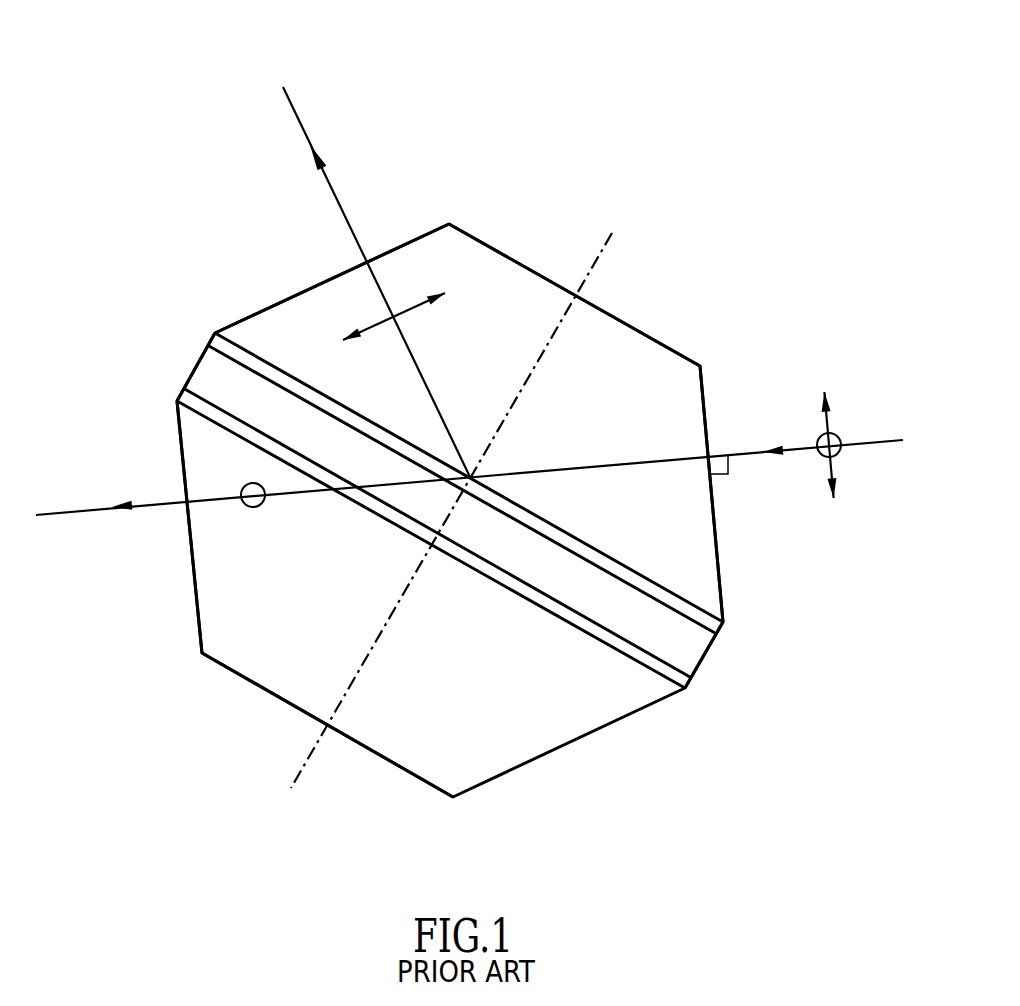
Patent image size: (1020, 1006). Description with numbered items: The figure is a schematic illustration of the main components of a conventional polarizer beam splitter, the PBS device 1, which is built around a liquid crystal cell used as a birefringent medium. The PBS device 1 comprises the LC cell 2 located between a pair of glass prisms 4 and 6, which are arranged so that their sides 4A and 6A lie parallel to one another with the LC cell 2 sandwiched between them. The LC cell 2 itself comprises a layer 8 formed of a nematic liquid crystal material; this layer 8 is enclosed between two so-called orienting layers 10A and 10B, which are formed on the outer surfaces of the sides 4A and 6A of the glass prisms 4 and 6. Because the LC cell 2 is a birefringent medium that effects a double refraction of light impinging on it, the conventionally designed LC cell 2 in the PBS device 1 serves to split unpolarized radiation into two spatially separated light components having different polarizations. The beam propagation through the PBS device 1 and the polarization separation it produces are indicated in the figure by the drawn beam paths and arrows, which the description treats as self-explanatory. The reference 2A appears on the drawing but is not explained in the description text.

The polarizer beam splitter device 1 is at (147, 70).
The LC cell 2 is at (392, 405).
The first surface edge 2A is at (260, 353).
The glass prism 4 is at (634, 352).
The side of glass prism 4A is at (635, 568).
The glass prism 6 is at (207, 596).
The side of glass prism 6A is at (545, 610).
The nematic liquid crystal layer 8 is at (207, 373).
The orienting layer 10A is at (695, 610).
The orienting layer 10B is at (642, 657).